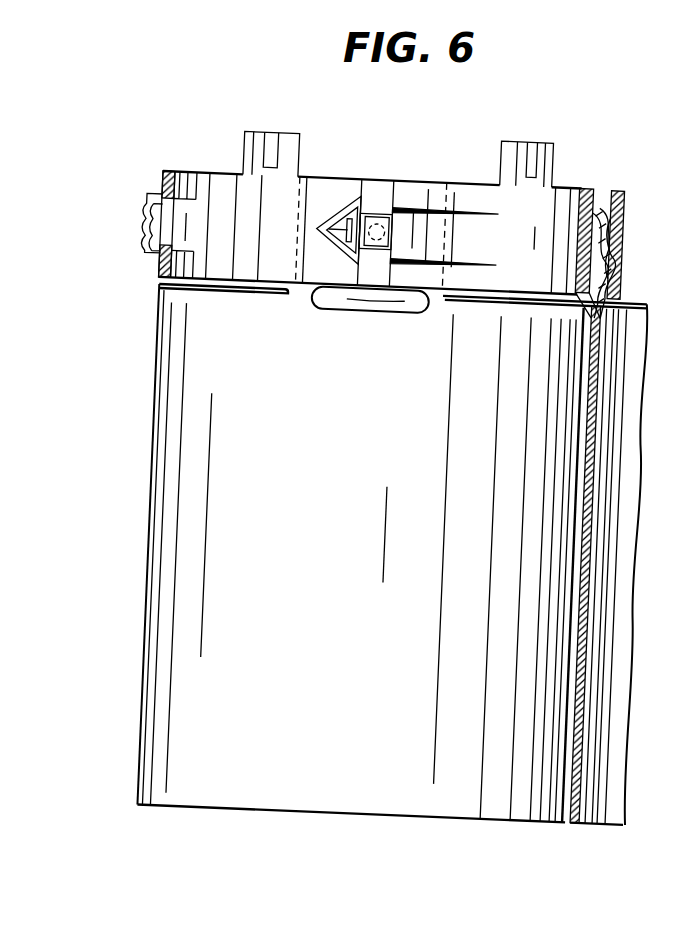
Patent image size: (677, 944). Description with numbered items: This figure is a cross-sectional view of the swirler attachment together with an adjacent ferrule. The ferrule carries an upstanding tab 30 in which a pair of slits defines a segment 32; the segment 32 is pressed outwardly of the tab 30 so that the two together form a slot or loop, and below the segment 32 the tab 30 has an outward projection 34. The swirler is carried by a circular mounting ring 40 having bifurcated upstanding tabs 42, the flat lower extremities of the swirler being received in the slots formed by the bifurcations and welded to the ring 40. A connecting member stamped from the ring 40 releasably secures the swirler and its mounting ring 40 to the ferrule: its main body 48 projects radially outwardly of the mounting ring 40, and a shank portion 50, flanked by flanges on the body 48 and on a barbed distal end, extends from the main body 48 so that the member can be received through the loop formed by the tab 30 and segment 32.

The tab 30 is at (618, 172).
The segment 32 is at (596, 199).
The outward projection 34 is at (363, 295).
The mounting ring 40 is at (163, 180).
The bifurcated upstanding tab 42 is at (508, 126).
The main body 48 is at (440, 211).
The shank portion 50 is at (145, 218).